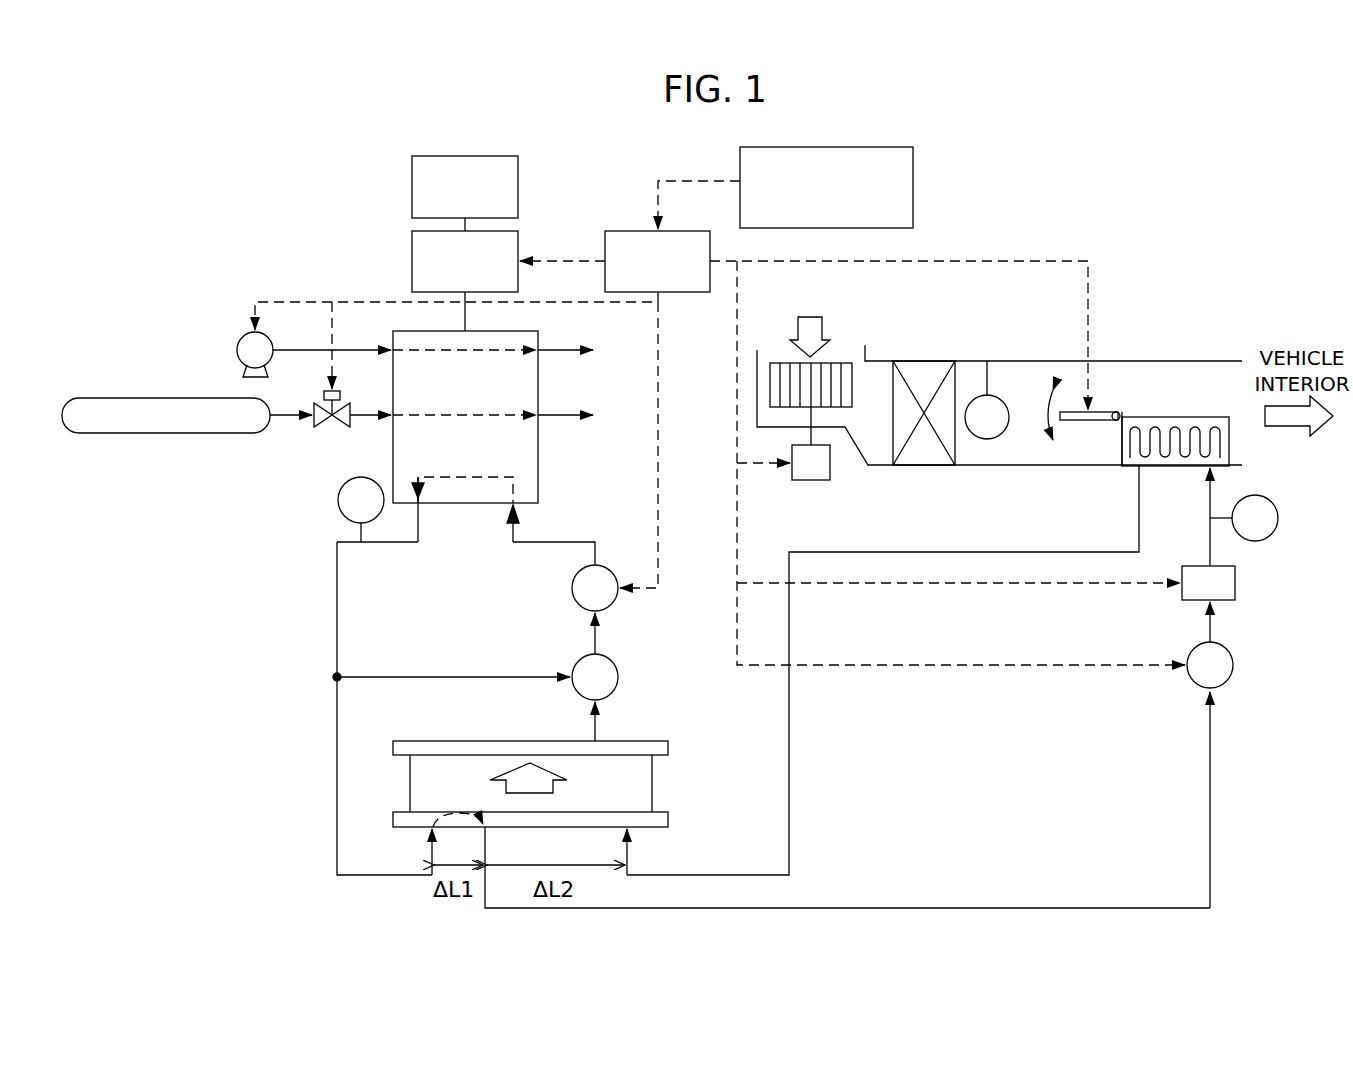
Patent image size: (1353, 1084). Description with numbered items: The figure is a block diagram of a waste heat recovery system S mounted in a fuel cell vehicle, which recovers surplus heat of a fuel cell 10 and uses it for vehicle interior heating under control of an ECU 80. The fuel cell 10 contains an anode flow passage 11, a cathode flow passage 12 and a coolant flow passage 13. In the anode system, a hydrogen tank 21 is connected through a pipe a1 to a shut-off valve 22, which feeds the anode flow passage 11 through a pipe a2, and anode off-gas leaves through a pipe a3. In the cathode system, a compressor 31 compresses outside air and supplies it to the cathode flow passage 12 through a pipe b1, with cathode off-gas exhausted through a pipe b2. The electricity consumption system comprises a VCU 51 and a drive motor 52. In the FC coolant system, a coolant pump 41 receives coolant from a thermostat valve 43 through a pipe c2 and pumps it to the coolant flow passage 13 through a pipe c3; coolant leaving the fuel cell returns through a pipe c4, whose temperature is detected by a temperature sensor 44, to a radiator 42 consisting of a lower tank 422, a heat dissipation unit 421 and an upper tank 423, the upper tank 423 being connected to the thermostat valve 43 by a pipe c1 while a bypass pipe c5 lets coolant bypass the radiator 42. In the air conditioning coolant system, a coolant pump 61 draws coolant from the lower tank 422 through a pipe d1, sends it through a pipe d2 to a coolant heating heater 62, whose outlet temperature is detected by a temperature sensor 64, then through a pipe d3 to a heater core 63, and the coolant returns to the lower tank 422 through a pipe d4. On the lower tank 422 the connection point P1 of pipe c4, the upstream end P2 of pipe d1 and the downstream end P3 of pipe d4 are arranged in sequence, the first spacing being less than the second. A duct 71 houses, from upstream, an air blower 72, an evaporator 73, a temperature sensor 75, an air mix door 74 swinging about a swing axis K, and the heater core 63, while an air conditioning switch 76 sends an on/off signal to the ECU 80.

The fuel cell 10 is at (538, 464).
The anode flow passage 11 is at (426, 418).
The cathode flow passage 12 is at (437, 357).
The coolant flow passage 13 is at (483, 472).
The hydrogen tank 21 is at (160, 398).
The shut-off valve 22 is at (329, 427).
The compressor 31 is at (237, 331).
The coolant pump 41 is at (570, 588).
The radiator 42 is at (567, 765).
The thermostat valve 43 is at (581, 700).
The temperature sensor 44 is at (338, 500).
The voltage control unit 51 is at (519, 249).
The drive motor 52 is at (519, 187).
The coolant pump 61 is at (1233, 666).
The coolant heating heater 62 is at (1235, 584).
The heater core 63 is at (1192, 417).
The temperature sensor 64 is at (1278, 519).
The duct 71 is at (1160, 361).
The air blower 72 is at (785, 361).
The evaporator 73 is at (920, 465).
The air mix door 74 is at (1106, 407).
The temperature sensor 75 is at (1005, 430).
The air conditioning switch 76 is at (914, 187).
The electric control unit 80 is at (619, 231).
The heat dissipation unit 421 is at (652, 786).
The lower tank 422 is at (668, 821).
The upper tank 423 is at (668, 750).
The pipe a1 is at (283, 407).
The pipe a2 is at (366, 407).
The pipe a3 is at (564, 407).
The pipe b1 is at (355, 344).
The pipe b2 is at (564, 344).
The pipe c1 is at (596, 729).
The pipe c2 is at (596, 641).
The pipe c3 is at (562, 542).
The pipe c4 is at (337, 726).
The bypass pipe c5 is at (462, 672).
The pipe d1 is at (1208, 769).
The pipe d2 is at (1208, 631).
The pipe d3 is at (1210, 536).
The pipe d4 is at (790, 762).
The connection point P1 is at (432, 835).
The connection point P2 is at (486, 835).
The connection point P3 is at (628, 835).
The swing axis K is at (1118, 420).
The waste heat recovery system S is at (1117, 192).